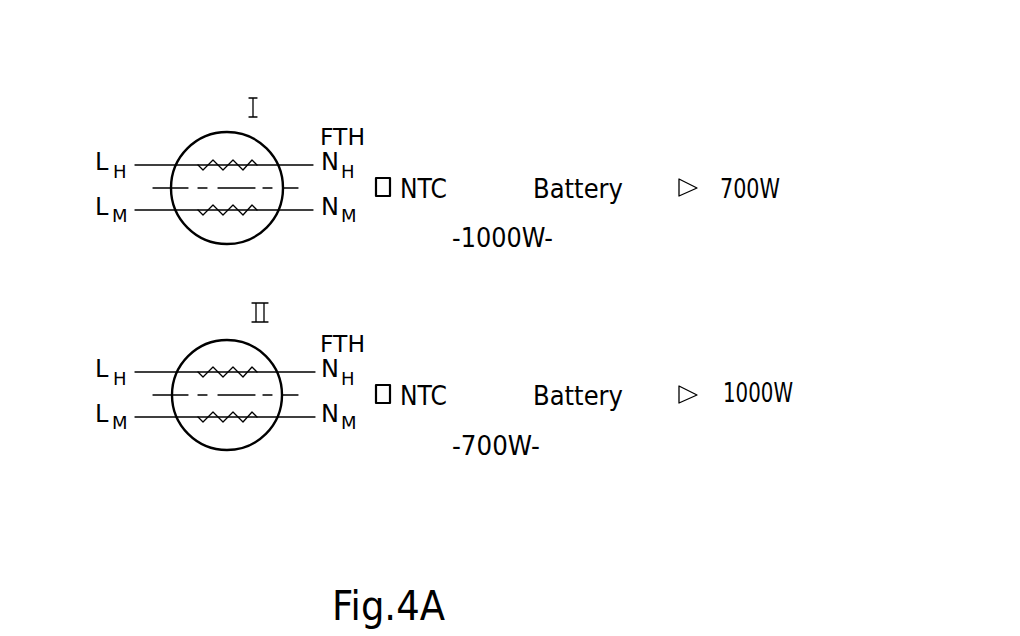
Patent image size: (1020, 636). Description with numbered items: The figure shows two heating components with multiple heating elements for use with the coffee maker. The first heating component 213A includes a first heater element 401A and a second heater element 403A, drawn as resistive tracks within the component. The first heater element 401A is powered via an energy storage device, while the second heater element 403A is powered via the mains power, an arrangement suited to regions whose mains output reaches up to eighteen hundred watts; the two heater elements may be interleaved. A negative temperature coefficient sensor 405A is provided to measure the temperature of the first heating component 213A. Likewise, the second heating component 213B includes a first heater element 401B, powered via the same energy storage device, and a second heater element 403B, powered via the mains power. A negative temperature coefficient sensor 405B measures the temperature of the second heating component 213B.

The first heating component 213A is at (215, 147).
The first heater element 401A is at (257, 162).
The second heater element 403A is at (243, 215).
The negative temperature coefficient (NTC) sensor 405A is at (380, 177).
The second heating component 213B is at (213, 421).
The first heater element 401B is at (247, 378).
The second heater element 403B is at (207, 410).
The negative temperature coefficient (NTC) sensor 405B is at (387, 408).